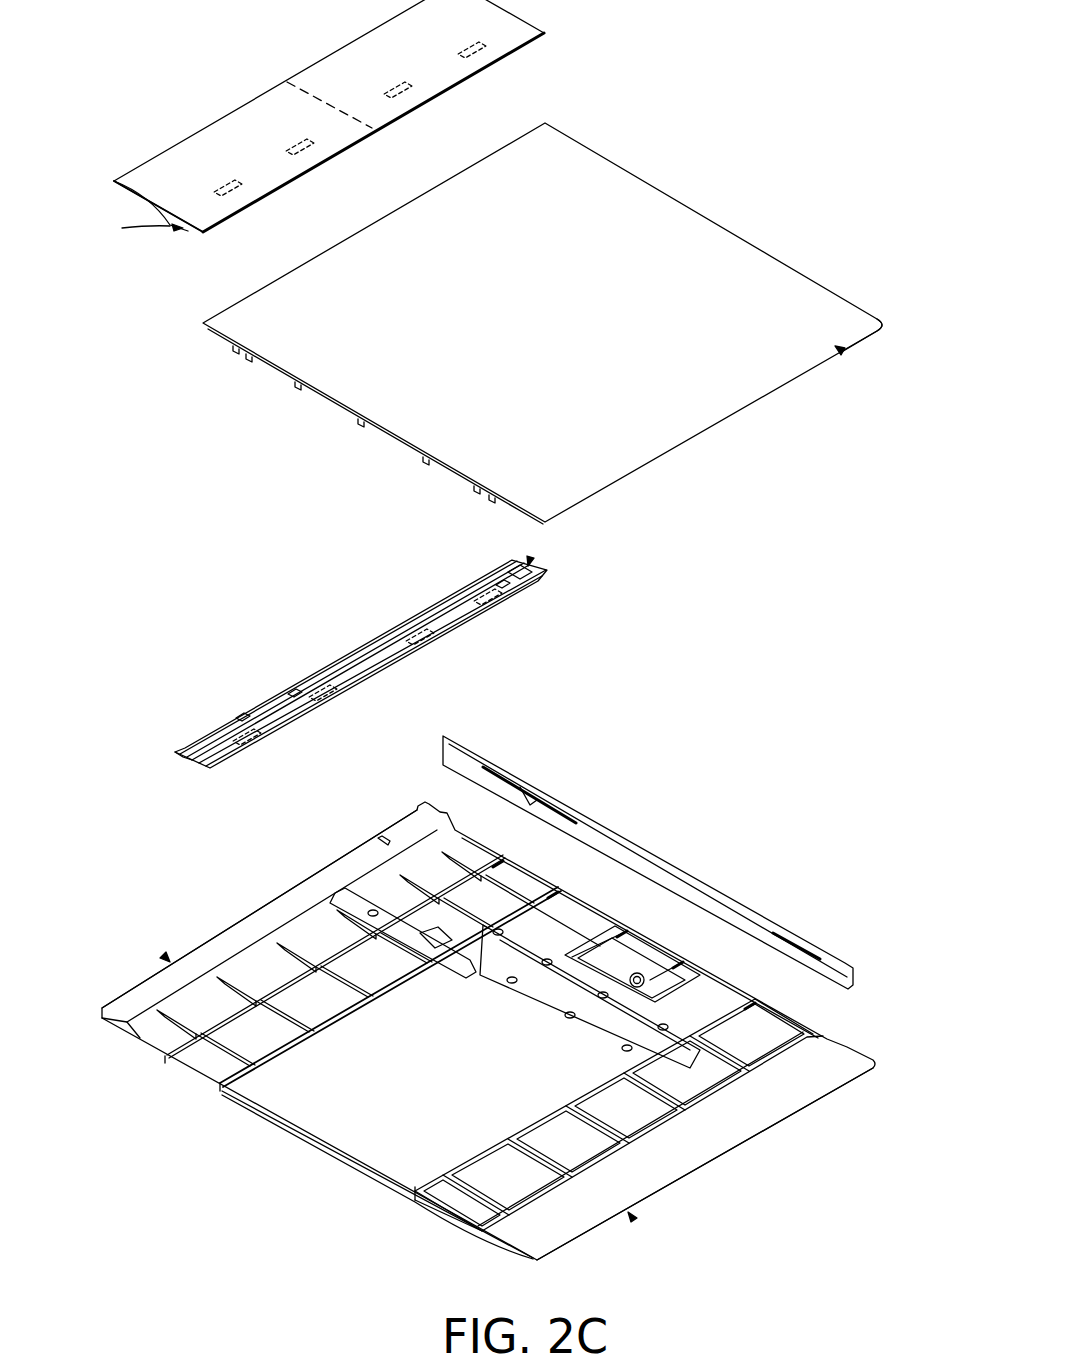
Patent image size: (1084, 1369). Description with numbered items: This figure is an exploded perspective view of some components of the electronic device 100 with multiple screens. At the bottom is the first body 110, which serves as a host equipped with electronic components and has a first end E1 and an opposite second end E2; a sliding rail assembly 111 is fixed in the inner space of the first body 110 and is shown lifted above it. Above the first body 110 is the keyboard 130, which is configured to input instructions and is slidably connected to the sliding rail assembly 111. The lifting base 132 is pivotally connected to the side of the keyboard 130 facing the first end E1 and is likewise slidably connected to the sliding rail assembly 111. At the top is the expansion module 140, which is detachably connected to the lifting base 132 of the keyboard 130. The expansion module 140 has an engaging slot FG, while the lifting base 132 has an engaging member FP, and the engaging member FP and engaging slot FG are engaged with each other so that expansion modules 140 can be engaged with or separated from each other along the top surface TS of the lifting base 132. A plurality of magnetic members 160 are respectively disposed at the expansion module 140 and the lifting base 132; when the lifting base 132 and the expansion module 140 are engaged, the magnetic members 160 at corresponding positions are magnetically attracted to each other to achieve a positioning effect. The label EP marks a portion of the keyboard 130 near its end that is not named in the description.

The electronic device with multiple screens 100 is at (927, 1282).
The first body 110 is at (338, 1123).
The sliding rail assembly 111 is at (840, 978).
The keyboard 130 is at (724, 245).
The lifting base 132 is at (462, 627).
The expansion module 140 is at (327, 70).
The magnetic members 160 is at (487, 47).
The first end E1 is at (166, 958).
The second end E2 is at (632, 1216).
The end portion EP is at (843, 350).
The engaging slot FG is at (157, 228).
The engaging member FP is at (195, 747).
The top surface TS is at (529, 562).